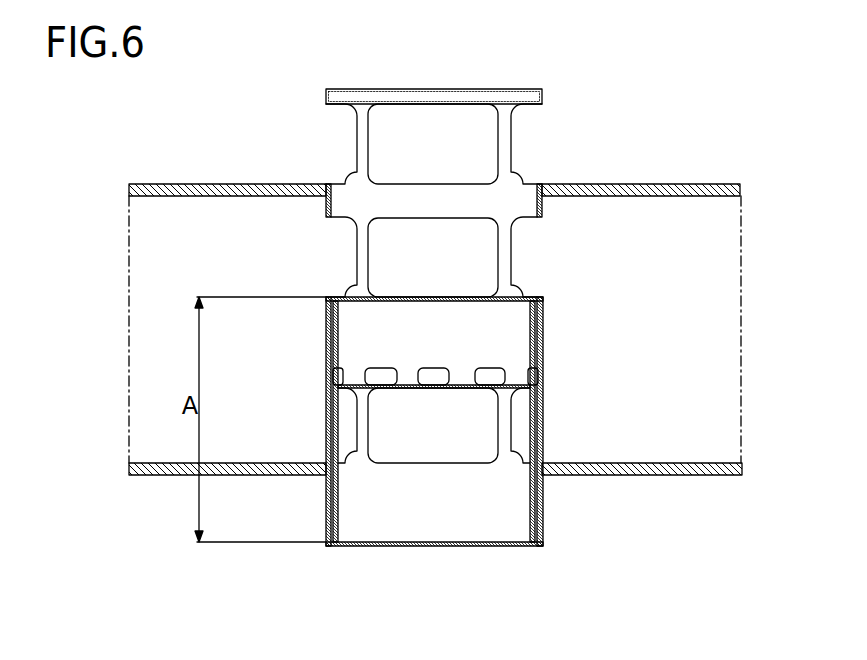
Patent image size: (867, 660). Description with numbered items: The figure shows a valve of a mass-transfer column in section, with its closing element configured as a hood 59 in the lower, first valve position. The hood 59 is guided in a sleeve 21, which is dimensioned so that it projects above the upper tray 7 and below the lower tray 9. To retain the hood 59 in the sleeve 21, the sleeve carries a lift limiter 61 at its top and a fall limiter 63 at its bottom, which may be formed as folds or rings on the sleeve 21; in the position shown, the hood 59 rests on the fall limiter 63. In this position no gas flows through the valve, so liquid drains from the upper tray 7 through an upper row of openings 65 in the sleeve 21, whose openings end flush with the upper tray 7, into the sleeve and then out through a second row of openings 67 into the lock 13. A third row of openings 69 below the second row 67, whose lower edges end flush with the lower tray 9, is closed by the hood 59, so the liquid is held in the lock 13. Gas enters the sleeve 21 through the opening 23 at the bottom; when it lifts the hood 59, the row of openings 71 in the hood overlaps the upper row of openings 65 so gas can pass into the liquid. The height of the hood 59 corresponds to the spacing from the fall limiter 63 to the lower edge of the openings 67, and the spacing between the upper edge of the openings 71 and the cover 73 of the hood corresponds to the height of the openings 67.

The upper tray 7 is at (640, 188).
The lower tray 9 is at (680, 476).
The lock 13 is at (158, 318).
The sleeve 21 is at (543, 505).
The opening 23 is at (428, 546).
The closing element configured as a hood 59 is at (452, 426).
The lift limiter 61 is at (338, 88).
The fall limiter 63 is at (327, 546).
The upper row of openings 65 is at (498, 138).
The second row of openings 67 is at (368, 258).
The third row of openings 69 is at (370, 424).
The row of openings in the hood 71 is at (497, 375).
The cover of the hood 73 is at (425, 297).